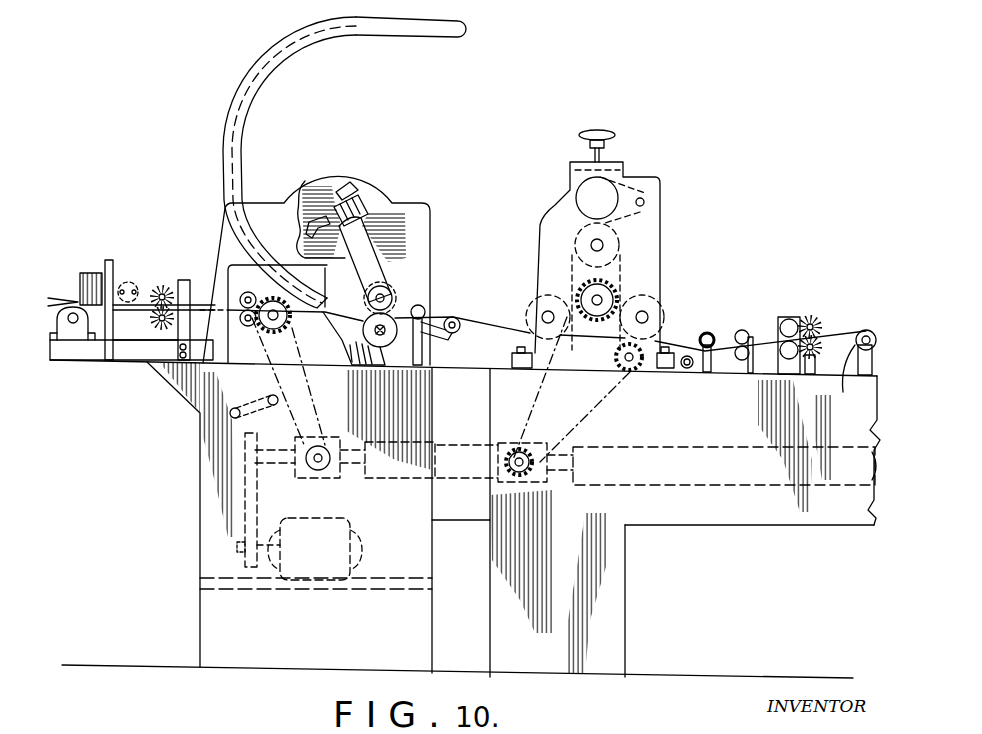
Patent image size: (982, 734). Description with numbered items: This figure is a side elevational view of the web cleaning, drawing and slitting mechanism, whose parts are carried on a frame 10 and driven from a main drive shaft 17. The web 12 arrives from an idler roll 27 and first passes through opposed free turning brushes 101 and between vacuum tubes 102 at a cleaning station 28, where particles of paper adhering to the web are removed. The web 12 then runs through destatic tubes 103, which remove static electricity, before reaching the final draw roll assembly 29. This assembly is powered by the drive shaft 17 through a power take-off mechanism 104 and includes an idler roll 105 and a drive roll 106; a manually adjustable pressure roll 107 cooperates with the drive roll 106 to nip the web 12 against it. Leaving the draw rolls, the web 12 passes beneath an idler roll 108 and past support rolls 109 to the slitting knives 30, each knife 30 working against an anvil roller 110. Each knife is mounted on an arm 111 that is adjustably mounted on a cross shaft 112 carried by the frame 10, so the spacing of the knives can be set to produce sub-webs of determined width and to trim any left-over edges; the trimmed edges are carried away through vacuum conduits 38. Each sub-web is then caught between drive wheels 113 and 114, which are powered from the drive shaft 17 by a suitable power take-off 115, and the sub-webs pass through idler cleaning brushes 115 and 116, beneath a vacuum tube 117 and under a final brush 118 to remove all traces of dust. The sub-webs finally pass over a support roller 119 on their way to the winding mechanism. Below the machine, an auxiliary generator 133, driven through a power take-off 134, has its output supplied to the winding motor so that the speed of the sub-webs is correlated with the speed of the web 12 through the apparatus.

The frame 10 is at (731, 527).
The web 12 is at (871, 328).
The drive shaft 17 is at (698, 447).
The idler roll 27 is at (852, 379).
The cleaning station 28 is at (802, 320).
The final draw roll assembly 29 is at (661, 215).
The slitting knife 30 is at (386, 291).
The vacuum conduit 38 is at (376, 28).
The free turning brush 101 is at (815, 340).
The vacuum tube 102 is at (789, 318).
The destatic tube 103 is at (742, 330).
The power take-off mechanism 104 is at (603, 402).
The idler roll 105 is at (655, 292).
The drive roll 106 is at (580, 240).
The manually adjustable pressure roll 107 is at (590, 193).
The idler roll 108 is at (535, 303).
The support roll 109 is at (455, 333).
The anvil roller 110 is at (373, 353).
The arm 111 is at (365, 232).
The cross shaft 112 is at (340, 220).
The drive wheel 113 is at (245, 297).
The drive wheel 114 is at (251, 326).
The idler cleaning brush 115 is at (163, 290).
The idler cleaning brush 116 is at (157, 320).
The vacuum tube 117 is at (128, 283).
The final brush 118 is at (82, 300).
The support roller 119 is at (90, 340).
The auxiliary generator 133 is at (327, 520).
The power take-off 134 is at (257, 495).